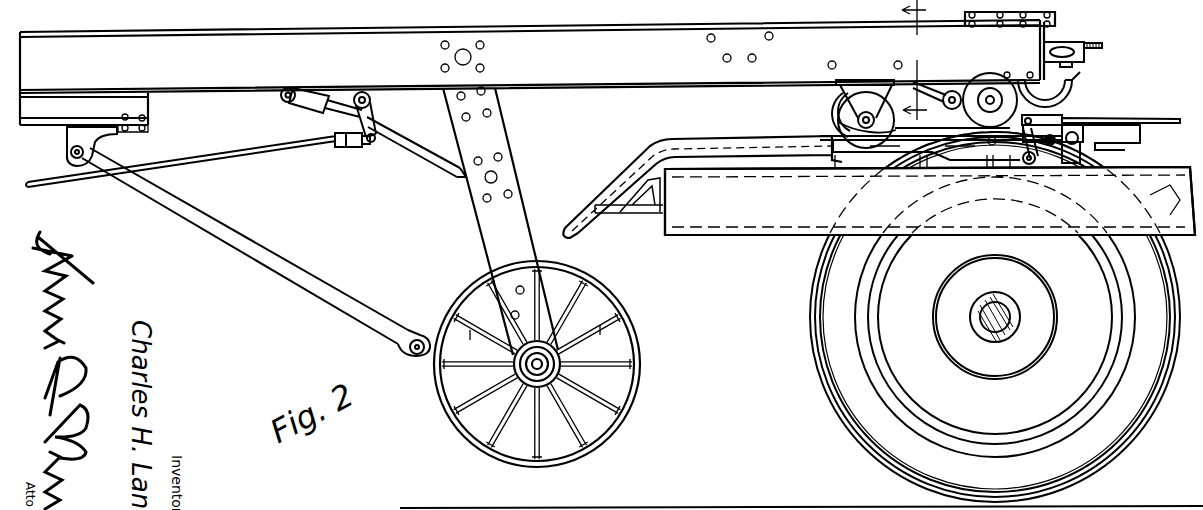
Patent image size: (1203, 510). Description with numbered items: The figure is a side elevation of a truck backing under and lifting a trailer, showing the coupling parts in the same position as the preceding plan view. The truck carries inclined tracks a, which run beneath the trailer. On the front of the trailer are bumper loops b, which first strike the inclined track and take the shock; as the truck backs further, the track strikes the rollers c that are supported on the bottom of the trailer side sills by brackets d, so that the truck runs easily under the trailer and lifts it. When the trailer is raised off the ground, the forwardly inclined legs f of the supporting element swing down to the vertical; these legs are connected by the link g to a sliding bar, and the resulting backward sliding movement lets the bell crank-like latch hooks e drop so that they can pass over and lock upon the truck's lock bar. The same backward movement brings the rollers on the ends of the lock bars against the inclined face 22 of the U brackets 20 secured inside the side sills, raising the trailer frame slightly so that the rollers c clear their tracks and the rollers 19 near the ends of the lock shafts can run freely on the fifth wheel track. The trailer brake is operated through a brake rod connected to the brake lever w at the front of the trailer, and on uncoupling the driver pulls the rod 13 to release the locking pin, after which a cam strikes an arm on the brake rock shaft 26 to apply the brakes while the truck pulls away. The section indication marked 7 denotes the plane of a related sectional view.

The section line 7- 7 is at (923, 63).
The rod 13 is at (1141, 118).
The rollers 19 is at (1010, 109).
The U brackets 20 is at (800, 111).
The inclined face 22 is at (863, 94).
The brake rock shaft 26 is at (372, 104).
The tracks a is at (605, 186).
The bumper loops b is at (1078, 78).
The rollers c is at (834, 123).
The brackets d is at (824, 103).
The latch hooks e is at (955, 92).
The forwardly inclined legs f is at (520, 166).
The link g is at (403, 144).
The brake lever w is at (1068, 43).